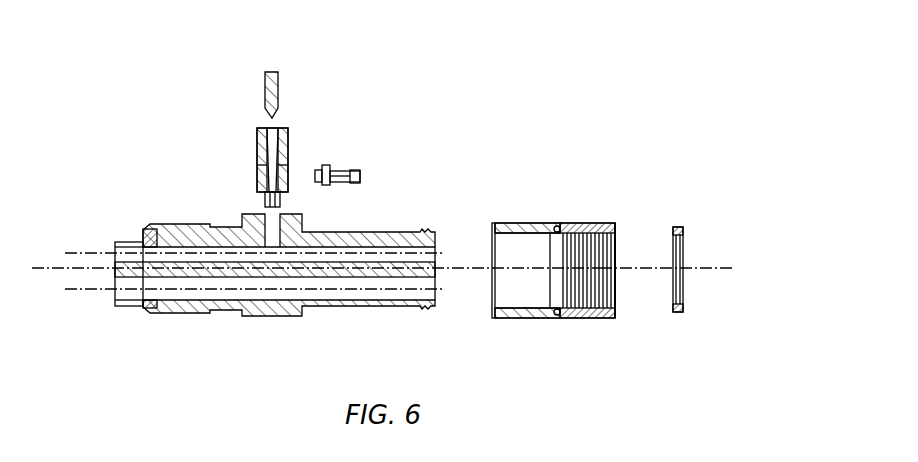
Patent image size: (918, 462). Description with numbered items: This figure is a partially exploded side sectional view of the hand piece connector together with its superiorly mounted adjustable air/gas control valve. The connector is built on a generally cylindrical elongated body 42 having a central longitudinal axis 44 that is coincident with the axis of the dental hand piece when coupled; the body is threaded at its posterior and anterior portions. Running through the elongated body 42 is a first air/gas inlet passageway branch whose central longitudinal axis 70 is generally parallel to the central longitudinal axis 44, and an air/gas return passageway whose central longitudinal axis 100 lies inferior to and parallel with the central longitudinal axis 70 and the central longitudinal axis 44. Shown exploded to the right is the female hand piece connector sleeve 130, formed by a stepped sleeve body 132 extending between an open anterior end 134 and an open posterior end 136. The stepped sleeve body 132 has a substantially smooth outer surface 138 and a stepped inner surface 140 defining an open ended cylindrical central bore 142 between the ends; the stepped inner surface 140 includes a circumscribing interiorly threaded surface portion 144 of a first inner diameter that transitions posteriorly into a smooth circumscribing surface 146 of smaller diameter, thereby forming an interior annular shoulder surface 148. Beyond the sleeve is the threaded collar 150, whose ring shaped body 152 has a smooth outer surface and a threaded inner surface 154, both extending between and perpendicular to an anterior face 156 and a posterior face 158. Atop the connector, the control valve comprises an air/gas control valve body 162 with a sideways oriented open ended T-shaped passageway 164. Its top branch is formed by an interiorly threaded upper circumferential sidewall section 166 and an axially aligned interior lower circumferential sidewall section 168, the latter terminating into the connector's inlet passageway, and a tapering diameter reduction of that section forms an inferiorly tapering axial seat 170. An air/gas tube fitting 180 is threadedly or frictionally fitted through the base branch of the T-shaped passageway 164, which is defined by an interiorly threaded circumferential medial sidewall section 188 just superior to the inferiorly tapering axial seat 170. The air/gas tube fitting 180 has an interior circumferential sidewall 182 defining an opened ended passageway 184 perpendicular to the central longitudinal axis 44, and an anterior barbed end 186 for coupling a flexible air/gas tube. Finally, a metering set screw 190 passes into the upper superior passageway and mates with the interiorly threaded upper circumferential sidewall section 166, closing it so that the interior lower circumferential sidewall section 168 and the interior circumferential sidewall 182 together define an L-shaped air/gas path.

The elongated body 42 is at (253, 317).
The central longitudinal axis 44 is at (42, 268).
The central longitudinal axis 70 is at (77, 253).
The central longitudinal axis 100 is at (72, 290).
The female hand piece connector sleeve 130 is at (587, 213).
The stepped sleeve body 132 is at (512, 218).
The open anterior end 134 is at (620, 296).
The open posterior end 136 is at (492, 232).
The outer surface 138 is at (537, 222).
The stepped inner surface 140 is at (510, 302).
The central bore 142 is at (623, 278).
The interiorly threaded surface portion 144 is at (618, 306).
The circumscribing surface 146 is at (540, 308).
The interior annular shoulder surface 148 is at (558, 225).
The threaded collar 150 is at (681, 217).
The ring shaped body 152 is at (675, 227).
The threaded inner surface 154 is at (683, 295).
The anterior face 156 is at (683, 250).
The posterior face 158 is at (617, 232).
The air/gas control valve body 162 is at (257, 143).
The T-shaped passageway 164 is at (268, 126).
The interiorly threaded upper circumferential sidewall section 166 is at (257, 135).
The interior lower circumferential sidewall section 168 is at (257, 178).
The inferiorly tapering axial seat 170 is at (257, 167).
The air/gas tube fitting 180 is at (337, 167).
The interior circumferential sidewall 182 is at (340, 172).
The opened ended passageway 184 is at (350, 170).
The anterior barbed end 186 is at (360, 182).
The interiorly threaded circumferential medial sidewall section 188 is at (288, 163).
The metering set screw 190 is at (280, 82).